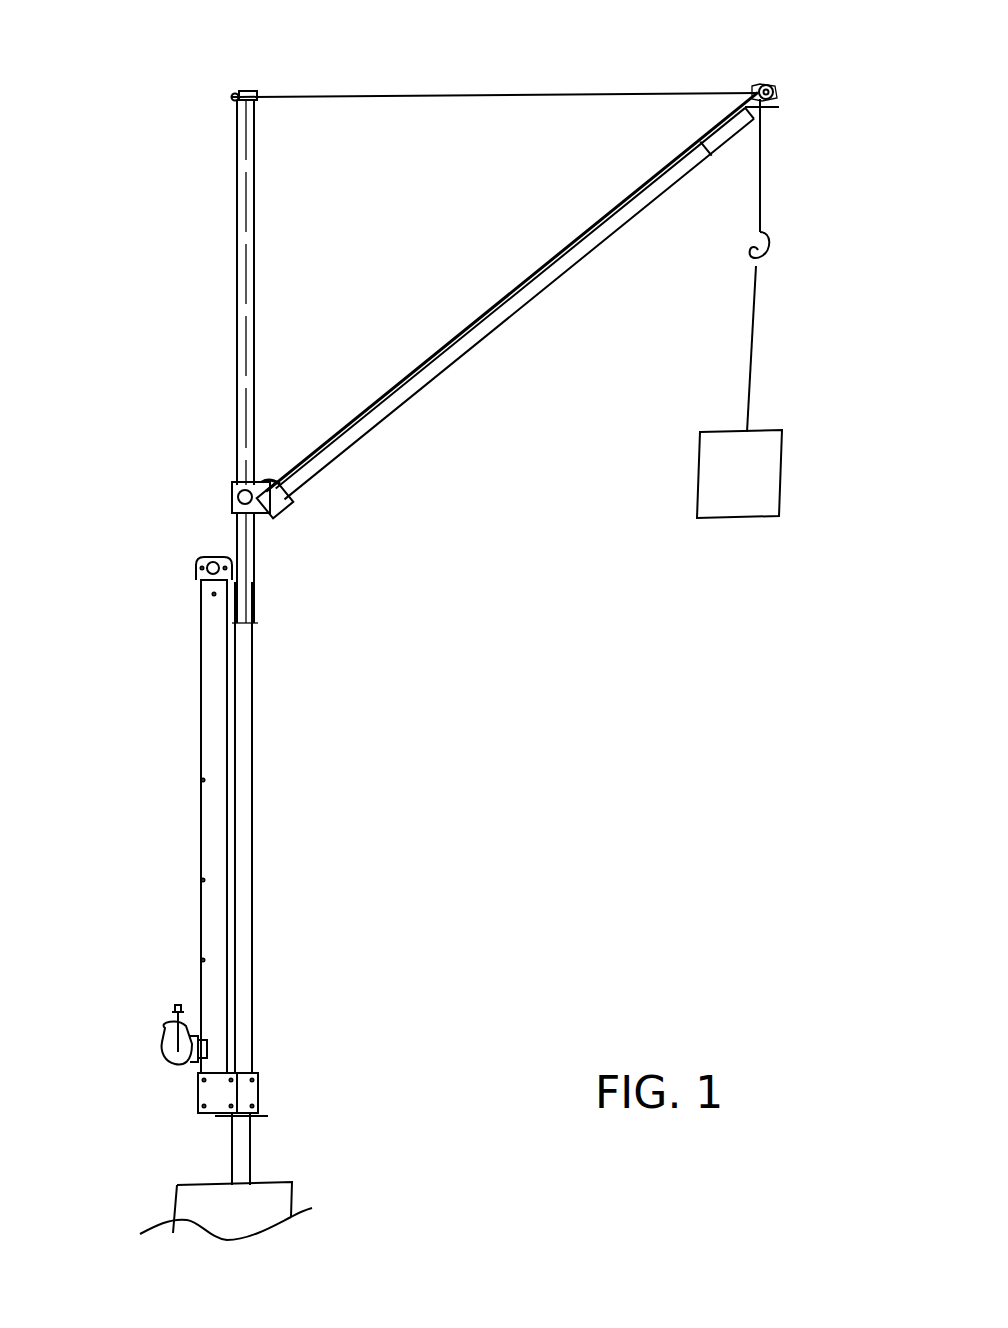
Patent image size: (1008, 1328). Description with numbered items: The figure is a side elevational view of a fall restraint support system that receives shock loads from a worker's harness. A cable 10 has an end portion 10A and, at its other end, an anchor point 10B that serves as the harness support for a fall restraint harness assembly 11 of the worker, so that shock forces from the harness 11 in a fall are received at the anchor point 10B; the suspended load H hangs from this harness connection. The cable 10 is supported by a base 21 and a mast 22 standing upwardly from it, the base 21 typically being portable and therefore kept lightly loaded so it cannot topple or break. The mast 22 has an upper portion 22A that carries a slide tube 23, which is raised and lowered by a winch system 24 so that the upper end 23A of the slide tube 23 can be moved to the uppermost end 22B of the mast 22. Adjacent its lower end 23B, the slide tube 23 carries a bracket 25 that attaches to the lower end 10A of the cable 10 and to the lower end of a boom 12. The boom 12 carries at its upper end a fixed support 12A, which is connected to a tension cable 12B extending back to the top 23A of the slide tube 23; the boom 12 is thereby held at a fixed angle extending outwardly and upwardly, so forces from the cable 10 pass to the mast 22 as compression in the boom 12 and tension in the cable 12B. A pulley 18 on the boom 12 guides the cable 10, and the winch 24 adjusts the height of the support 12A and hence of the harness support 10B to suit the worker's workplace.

The cable 10 is at (516, 289).
The end portion of cable 10A is at (300, 458).
The anchor point 10B is at (770, 262).
The fall restraint harness assembly 11 is at (757, 360).
The boom 12 is at (494, 326).
The fixed support 12A is at (772, 74).
The tension cable 12B is at (628, 88).
The pulley 18 is at (760, 108).
The base 21 is at (193, 1198).
The mast 22 is at (243, 1145).
The upper portion of mast 22A is at (252, 858).
The uppermost end of mast 22B is at (249, 91).
The slide tube 23 is at (256, 348).
The upper end of slide tube 23A is at (237, 106).
The lower end of slide tube 23B is at (256, 560).
The winch system 24 is at (150, 868).
The bracket 25 is at (262, 483).
The hoisted load H is at (739, 474).